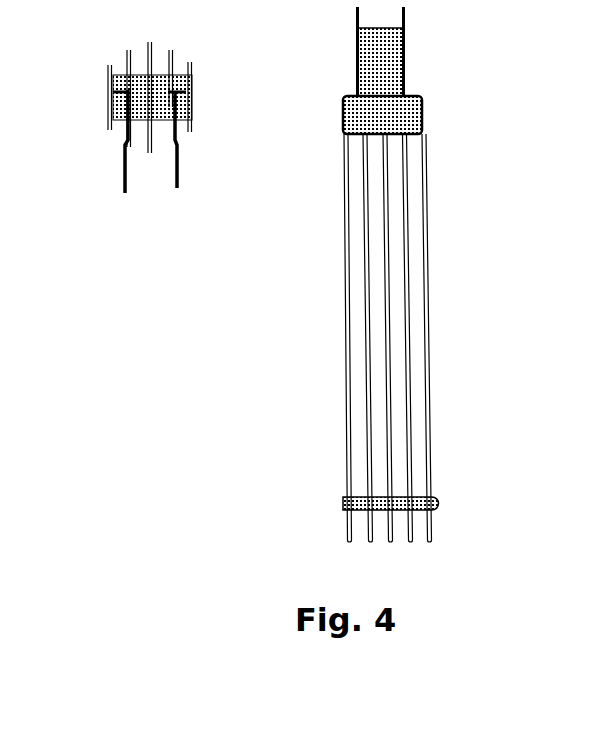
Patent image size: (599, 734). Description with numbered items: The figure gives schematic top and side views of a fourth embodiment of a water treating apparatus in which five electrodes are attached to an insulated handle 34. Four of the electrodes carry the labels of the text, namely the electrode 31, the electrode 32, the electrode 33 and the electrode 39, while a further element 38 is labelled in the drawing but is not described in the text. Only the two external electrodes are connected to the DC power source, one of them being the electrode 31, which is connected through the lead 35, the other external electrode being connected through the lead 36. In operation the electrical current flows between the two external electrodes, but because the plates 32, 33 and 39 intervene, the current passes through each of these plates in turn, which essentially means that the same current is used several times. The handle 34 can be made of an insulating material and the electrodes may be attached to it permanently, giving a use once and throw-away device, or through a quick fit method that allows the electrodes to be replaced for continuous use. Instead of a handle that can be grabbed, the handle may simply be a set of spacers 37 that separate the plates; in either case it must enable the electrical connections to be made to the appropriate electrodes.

The electrode 31 is at (106, 89).
The electrode 32 is at (124, 52).
The electrode 33 is at (147, 42).
The insulated handle 34 is at (166, 86).
The lead 35 is at (124, 157).
The lead 36 is at (180, 182).
The spacer 37 is at (338, 496).
The contact pin 38 is at (194, 117).
The electrode 39 is at (183, 48).